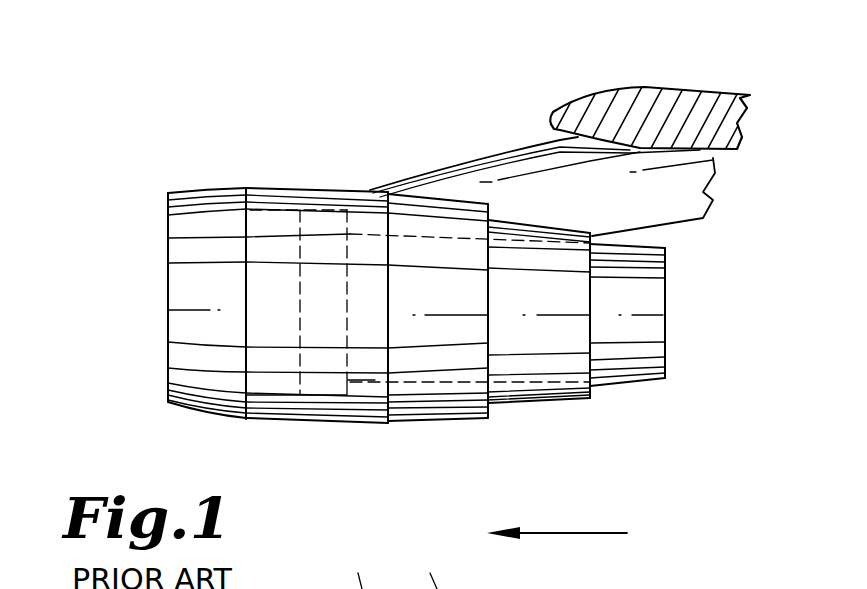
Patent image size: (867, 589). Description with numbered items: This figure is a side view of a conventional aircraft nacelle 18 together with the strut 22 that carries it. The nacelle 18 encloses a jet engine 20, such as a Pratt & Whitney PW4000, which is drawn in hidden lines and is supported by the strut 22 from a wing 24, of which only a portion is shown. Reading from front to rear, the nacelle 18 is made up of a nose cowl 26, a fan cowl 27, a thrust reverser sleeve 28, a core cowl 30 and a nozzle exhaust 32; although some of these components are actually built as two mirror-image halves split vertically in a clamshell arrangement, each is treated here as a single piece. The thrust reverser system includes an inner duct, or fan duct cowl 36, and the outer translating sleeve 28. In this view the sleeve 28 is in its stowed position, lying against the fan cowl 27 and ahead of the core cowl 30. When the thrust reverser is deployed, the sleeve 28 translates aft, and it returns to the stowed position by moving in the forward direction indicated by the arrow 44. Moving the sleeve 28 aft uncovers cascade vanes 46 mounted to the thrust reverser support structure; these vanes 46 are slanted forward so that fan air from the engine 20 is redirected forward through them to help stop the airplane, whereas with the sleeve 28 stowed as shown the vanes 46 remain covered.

The nacelle 18 is at (243, 176).
The jet engine 20 is at (303, 210).
The strut 22 is at (482, 162).
The wing 24 is at (650, 102).
The nose cowl 26 is at (197, 212).
The fan cowl 27 is at (323, 190).
The thrust reverser sleeve 28 is at (415, 225).
The core cowl 30 is at (533, 239).
The nozzle exhaust 32 is at (647, 296).
The forward direction arrow 44 is at (545, 532).
The cascade vanes 46 is at (362, 588).
The inner duct (fan duct cowl) 36 is at (437, 588).